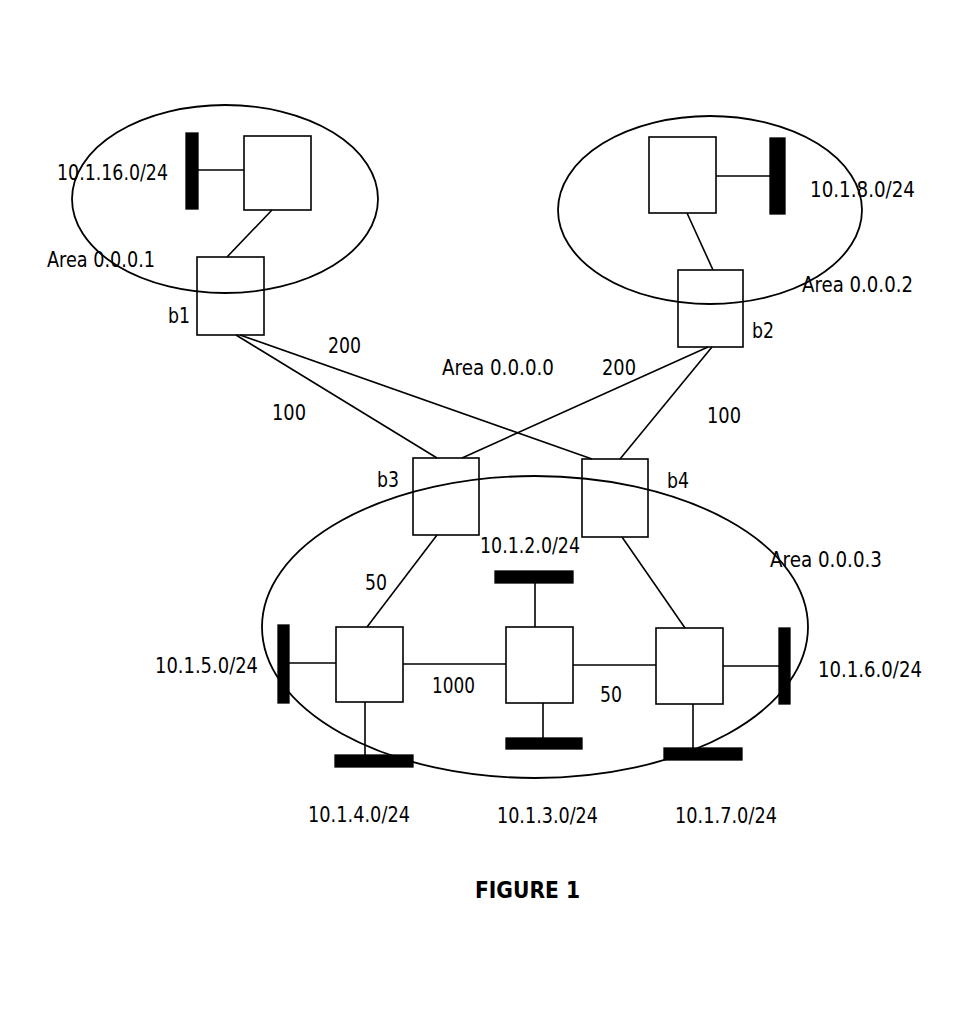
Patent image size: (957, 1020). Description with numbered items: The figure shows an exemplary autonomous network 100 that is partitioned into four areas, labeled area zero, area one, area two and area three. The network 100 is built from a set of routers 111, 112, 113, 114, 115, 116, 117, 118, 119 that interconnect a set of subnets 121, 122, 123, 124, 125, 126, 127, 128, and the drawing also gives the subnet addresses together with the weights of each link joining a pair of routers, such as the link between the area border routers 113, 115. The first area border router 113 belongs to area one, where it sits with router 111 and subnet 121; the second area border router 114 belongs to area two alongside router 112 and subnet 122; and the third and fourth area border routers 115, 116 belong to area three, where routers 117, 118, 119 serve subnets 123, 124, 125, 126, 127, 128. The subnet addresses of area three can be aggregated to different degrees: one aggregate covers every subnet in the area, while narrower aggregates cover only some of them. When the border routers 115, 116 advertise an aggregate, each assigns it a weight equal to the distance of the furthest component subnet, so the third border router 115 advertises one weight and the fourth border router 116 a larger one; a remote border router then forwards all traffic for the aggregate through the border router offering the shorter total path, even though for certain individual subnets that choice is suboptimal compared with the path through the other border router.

The autonomous network 100 is at (487, 76).
The router 111 is at (279, 185).
The router 112 is at (692, 182).
The area border router b1 113 is at (233, 325).
The area border router b2 114 is at (723, 338).
The area border router b3 115 is at (450, 525).
The area border router b4 116 is at (628, 522).
The router 117 is at (385, 680).
The router 118 is at (555, 682).
The router 119 is at (707, 682).
The subnet 121 is at (200, 152).
The subnet 122 is at (786, 174).
The subnet 123 is at (502, 584).
The subnet 124 is at (290, 638).
The subnet 125 is at (387, 768).
The subnet 126 is at (540, 750).
The subnet 127 is at (777, 646).
The subnet 128 is at (744, 752).